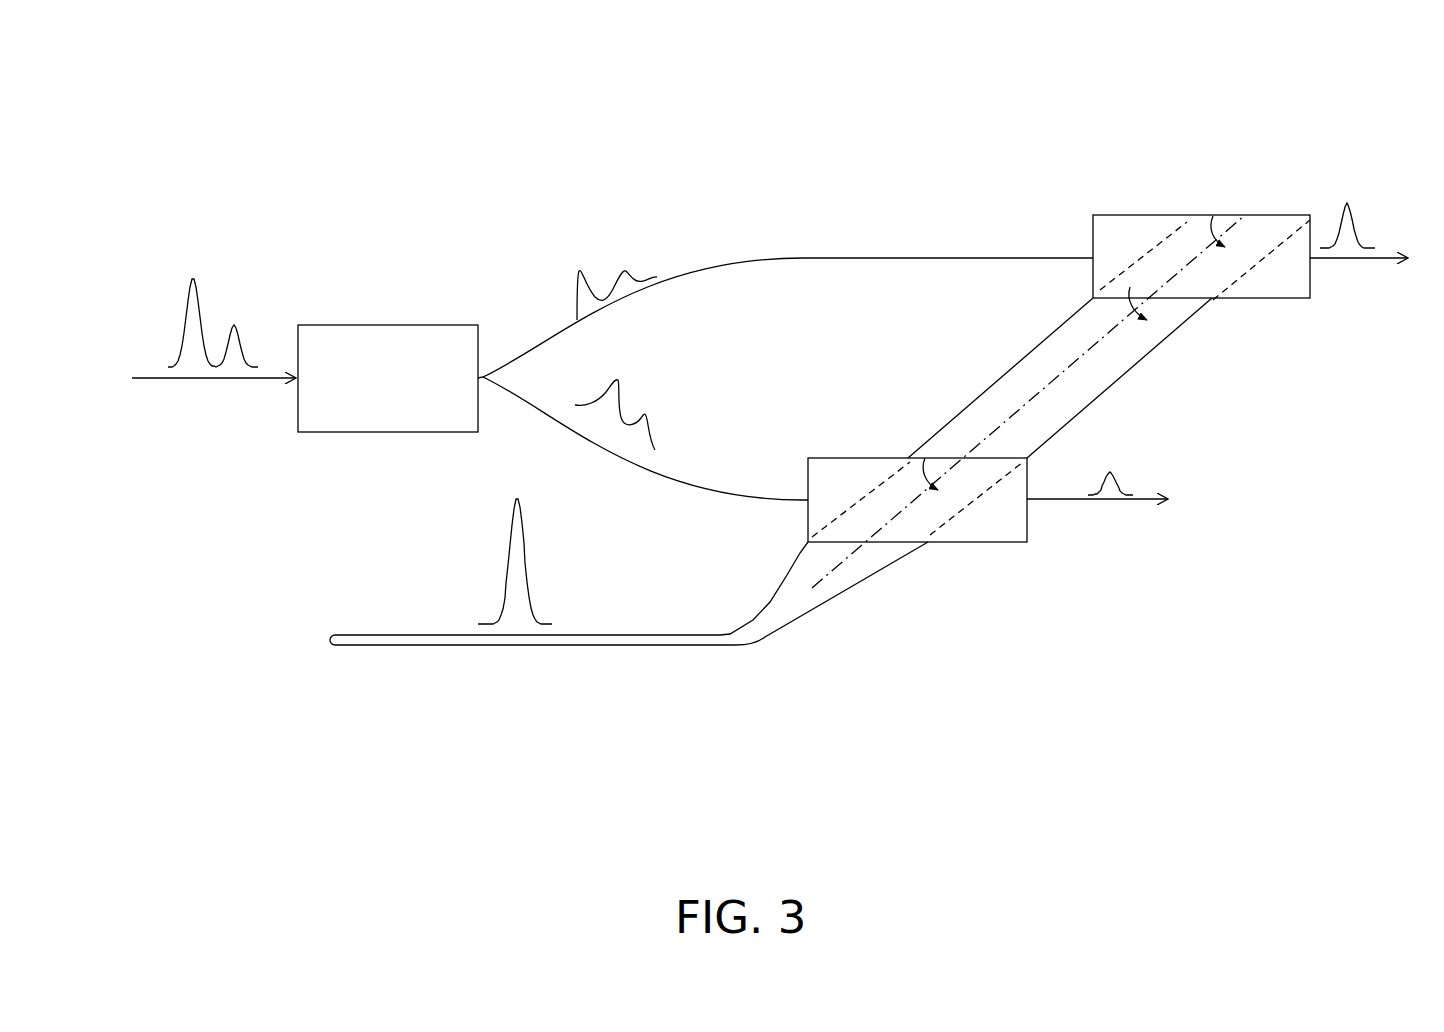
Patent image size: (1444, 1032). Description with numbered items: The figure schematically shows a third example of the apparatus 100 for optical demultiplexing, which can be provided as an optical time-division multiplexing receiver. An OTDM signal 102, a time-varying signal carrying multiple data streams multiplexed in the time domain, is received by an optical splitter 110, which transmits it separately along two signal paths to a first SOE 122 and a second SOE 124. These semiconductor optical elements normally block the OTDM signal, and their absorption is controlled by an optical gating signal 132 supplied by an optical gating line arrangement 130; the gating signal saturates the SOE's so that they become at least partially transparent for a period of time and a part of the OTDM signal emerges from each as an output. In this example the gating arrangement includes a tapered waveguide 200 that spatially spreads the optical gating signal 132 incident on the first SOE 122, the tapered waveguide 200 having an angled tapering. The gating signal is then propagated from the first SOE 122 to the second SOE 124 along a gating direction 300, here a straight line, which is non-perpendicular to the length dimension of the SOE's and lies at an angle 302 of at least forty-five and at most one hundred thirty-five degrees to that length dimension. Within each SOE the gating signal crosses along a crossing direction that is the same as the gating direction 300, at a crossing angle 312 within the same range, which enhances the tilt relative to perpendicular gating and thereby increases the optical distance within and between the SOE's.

The apparatus 100 is at (1290, 87).
The OTDM signal 102 is at (158, 312).
The optical splitter 110 is at (365, 320).
The first SOE 122 is at (830, 450).
The second SOE 124 is at (1128, 202).
The optical gating line arrangement 130 is at (410, 662).
The optical gating signal 132 is at (477, 560).
The tapered waveguide 200 is at (867, 592).
The gating direction 300 is at (1067, 379).
The angle 302 is at (1152, 305).
The crossing angle 312 is at (1227, 233).